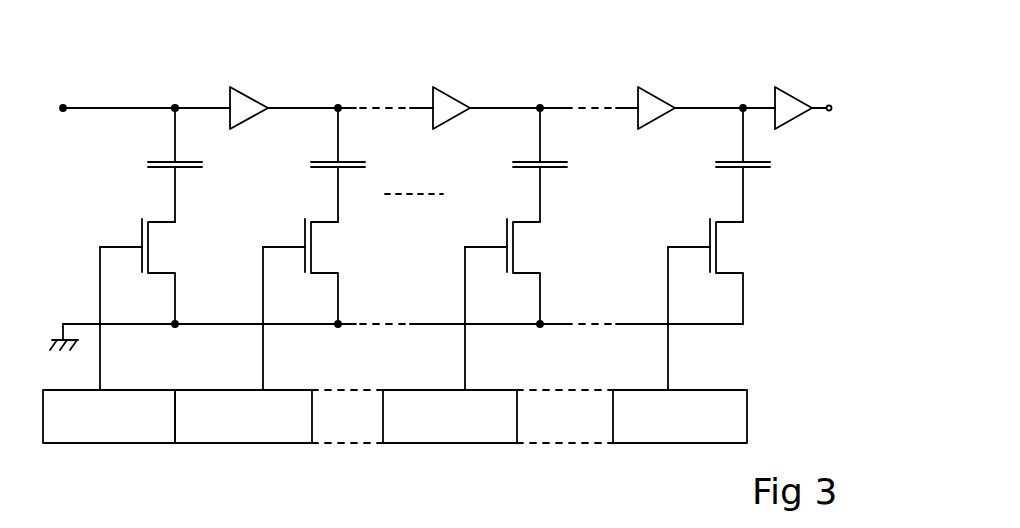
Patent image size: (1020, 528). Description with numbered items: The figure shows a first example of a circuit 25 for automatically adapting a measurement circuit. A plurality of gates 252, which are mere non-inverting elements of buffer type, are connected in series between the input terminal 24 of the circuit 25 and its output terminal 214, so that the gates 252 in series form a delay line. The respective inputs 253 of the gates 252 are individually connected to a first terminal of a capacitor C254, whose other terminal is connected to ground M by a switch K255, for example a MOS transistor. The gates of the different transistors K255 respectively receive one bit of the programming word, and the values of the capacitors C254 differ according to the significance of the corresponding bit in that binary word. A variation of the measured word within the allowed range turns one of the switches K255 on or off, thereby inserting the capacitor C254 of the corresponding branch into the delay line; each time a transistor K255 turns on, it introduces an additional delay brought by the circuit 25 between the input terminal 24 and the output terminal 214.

The input terminal 24 is at (140, 96).
The inputs of gates 253 is at (177, 105).
The gates 252 is at (246, 98).
The output terminal 214 is at (827, 112).
The circuit 25 is at (516, 67).
The capacitor C254 is at (459, 165).
The switch K255 is at (421, 304).
The ground M is at (88, 323).